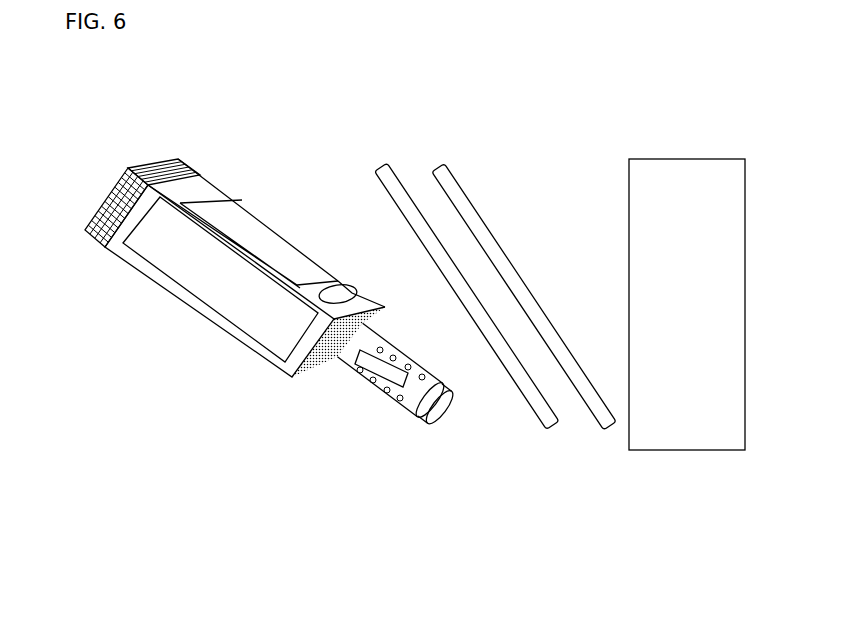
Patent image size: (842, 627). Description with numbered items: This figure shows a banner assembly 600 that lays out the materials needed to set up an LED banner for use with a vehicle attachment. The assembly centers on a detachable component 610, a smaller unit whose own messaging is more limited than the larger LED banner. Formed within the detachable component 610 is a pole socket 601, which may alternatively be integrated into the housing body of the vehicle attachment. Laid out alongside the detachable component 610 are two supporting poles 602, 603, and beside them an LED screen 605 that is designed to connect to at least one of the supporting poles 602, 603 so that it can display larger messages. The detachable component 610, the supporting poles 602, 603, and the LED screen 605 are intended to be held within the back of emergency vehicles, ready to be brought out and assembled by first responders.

The banner assembly 600 is at (278, 140).
The detachable component 610 is at (197, 342).
The pole socket 601 is at (338, 282).
The supporting pole 602 is at (508, 405).
The supporting pole 603 is at (580, 410).
The LED screen 605 is at (615, 228).